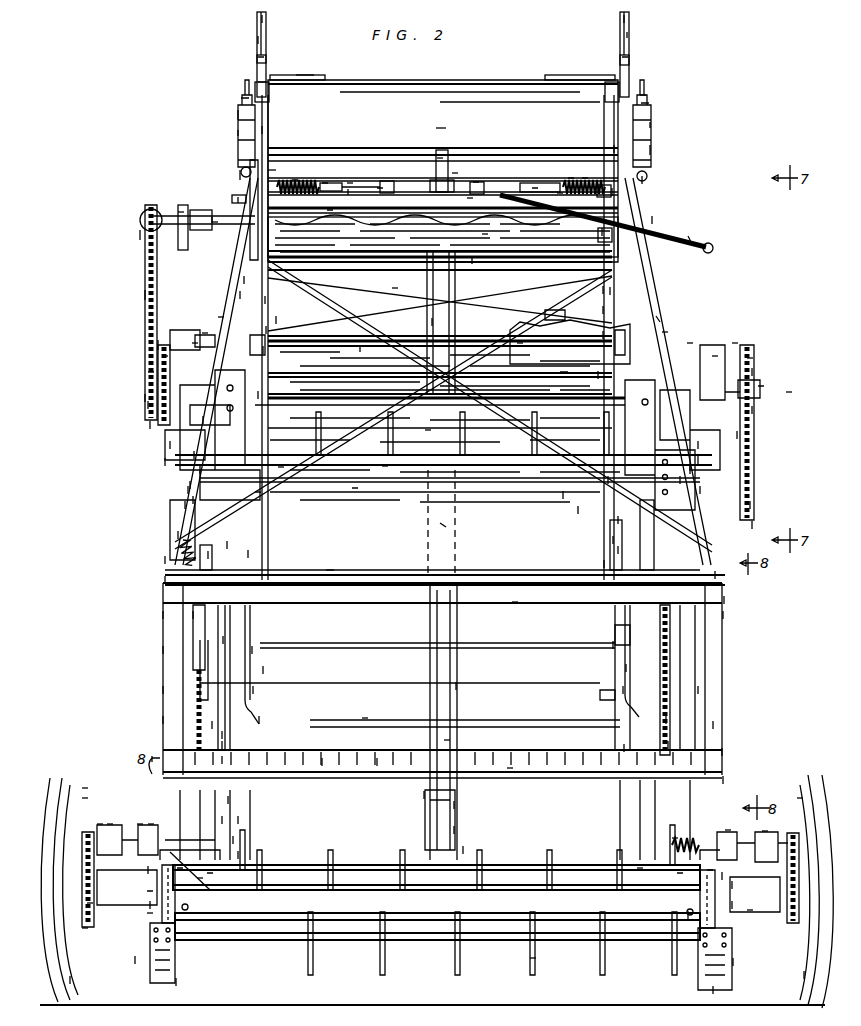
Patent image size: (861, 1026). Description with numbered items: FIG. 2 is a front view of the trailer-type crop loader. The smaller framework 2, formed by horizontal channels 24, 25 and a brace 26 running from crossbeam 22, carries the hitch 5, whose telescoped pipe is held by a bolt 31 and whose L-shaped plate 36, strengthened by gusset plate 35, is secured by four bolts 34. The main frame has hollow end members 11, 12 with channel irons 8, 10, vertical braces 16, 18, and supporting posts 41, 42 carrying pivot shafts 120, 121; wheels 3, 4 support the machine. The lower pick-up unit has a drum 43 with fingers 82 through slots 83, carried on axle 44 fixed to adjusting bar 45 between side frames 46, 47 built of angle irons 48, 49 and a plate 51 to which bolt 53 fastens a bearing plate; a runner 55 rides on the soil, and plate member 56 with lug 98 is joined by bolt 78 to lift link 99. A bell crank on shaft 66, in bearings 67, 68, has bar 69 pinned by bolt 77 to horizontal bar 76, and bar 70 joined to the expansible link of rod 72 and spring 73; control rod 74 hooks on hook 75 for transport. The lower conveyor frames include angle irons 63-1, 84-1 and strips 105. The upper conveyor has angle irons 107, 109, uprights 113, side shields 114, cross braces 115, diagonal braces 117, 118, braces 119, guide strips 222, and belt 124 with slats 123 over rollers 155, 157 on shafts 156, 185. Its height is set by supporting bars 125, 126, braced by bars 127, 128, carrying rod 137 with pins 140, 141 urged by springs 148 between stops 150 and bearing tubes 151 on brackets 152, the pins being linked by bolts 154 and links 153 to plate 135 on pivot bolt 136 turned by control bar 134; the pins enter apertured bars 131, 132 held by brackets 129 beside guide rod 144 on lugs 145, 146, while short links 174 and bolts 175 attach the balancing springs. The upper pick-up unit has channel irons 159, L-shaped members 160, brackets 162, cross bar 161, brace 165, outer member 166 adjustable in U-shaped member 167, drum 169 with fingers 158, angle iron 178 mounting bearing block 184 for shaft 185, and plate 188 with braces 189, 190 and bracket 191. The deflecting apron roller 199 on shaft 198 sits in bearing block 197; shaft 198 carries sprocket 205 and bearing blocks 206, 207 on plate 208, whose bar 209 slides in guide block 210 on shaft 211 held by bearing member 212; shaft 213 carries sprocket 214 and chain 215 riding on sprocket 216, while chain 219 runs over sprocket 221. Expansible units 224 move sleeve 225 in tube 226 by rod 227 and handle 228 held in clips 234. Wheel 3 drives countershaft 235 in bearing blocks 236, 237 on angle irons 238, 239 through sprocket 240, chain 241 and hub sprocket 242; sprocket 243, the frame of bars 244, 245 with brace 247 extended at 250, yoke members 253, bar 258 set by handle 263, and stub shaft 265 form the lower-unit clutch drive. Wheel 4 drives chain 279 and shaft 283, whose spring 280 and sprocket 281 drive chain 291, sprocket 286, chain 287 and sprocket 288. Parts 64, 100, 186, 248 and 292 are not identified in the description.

The rigid smaller framework 2 is at (380, 762).
The wheel 3 is at (72, 980).
The wheel 4 is at (805, 975).
The hitch 5 is at (465, 850).
The channel iron 8 is at (152, 758).
The channel iron 10 is at (725, 780).
The end member 11 is at (85, 930).
The end member 12 is at (750, 912).
The vertical brace 16 is at (163, 720).
The vertical brace 18 is at (715, 725).
The crossbeam 22 is at (515, 605).
The horizontal channel 24 is at (325, 762).
The horizontal channel 25 is at (510, 770).
The brace 26 is at (458, 686).
The bolt 31 is at (447, 742).
The bolts 34 is at (456, 805).
The gusset plate 35 is at (455, 830).
The L-shaped plate 36 is at (425, 795).
The supporting post 41 is at (165, 560).
The supporting post 42 is at (725, 615).
The drum 43 is at (415, 942).
The axle 44 is at (150, 895).
The adjusting bar 45 is at (150, 905).
The crop pick up side frame 46 is at (129, 963).
The crop pick up side frame 47 is at (741, 965).
The angle iron 48 is at (180, 870).
The angle iron 49 is at (185, 935).
The plate 51 is at (725, 876).
The bolt 53 is at (150, 915).
The runner 55 is at (178, 982).
The plate member 56 is at (210, 875).
The angle iron 63-1 is at (265, 670).
The spring 64 is at (640, 870).
The shaft 66 is at (330, 574).
The bearing 67 is at (165, 580).
The bearing 68 is at (715, 575).
The bar 69 is at (210, 555).
The bar 70 is at (195, 615).
The rod 72 is at (190, 490).
The spring 73 is at (230, 545).
The control rod 74 is at (722, 752).
The hook 75 is at (725, 600).
The horizontal bar 76 is at (615, 540).
The bolt 77 is at (620, 520).
The bolt 78 is at (240, 855).
The pick-up fingers 82 is at (533, 960).
The slots 83 is at (533, 935).
The angle iron 84-1 is at (615, 645).
The lug 98 is at (235, 840).
The angle iron link 99 is at (225, 640).
The conveyor 100 is at (365, 720).
The thin metal strip 105 is at (445, 525).
The angle iron 107 is at (262, 130).
The angle iron 109 is at (618, 150).
The uprights 113 is at (257, 40).
The side shields 114 is at (266, 19).
The cross braces 115 is at (475, 262).
The diagonal brace 117 is at (278, 320).
The diagonal brace 118 is at (403, 280).
The braces 119 is at (257, 60).
The pivot shaft 120 is at (180, 535).
The pivot shaft 121 is at (752, 505).
The slats 123 is at (305, 76).
The upper conveyor belt 124 is at (440, 130).
The supporting bar 125 is at (195, 455).
The supporting bar 126 is at (660, 320).
The bar 127 is at (280, 470).
The bar 128 is at (610, 480).
The rear brackets 129 is at (265, 350).
The bar 131 is at (268, 330).
The bar 132 is at (605, 310).
The control bar 134 is at (692, 240).
The rectangular plate 135 is at (455, 175).
The pivot bolt 136 is at (440, 160).
The rod 137 is at (470, 200).
The spring pressed pin 140 is at (560, 195).
The spring pressed pin 141 is at (352, 192).
The guide rod 144 is at (605, 290).
The lug 145 is at (605, 335).
The lug 146 is at (605, 232).
The springs 148 is at (295, 183).
The stop 150 is at (272, 172).
The bearing tube 151 is at (325, 185).
The bracket 152 is at (535, 190).
The link 153 is at (380, 190).
The bolt 154 is at (350, 185).
The roller 155 is at (264, 85).
The shaft 156 is at (645, 97).
The roller 157 is at (520, 345).
The pick up fingers 158 is at (385, 470).
The channel irons 159 is at (258, 495).
The L-shaped member 160 is at (170, 445).
The cross bar 161 is at (428, 432).
The brackets 162 is at (355, 490).
The brace 165 is at (680, 480).
The outer frame member 166 is at (165, 462).
The U-shaped frame member 167 is at (190, 485).
The pick up drum 169 is at (205, 420).
The short links 174 is at (185, 505).
The bolts 175 is at (195, 500).
The angle iron 178 is at (740, 435).
The bearing block 184 is at (750, 360).
The shaft 185 is at (150, 375).
The sprocket 186 is at (790, 395).
The plate 188 is at (690, 345).
The angle iron brace 189 is at (735, 345).
The angle iron brace 190 is at (715, 358).
The bracket 191 is at (665, 335).
The bearing block 197 is at (655, 220).
The upper roller shaft 198 is at (215, 226).
The roller 199 is at (485, 236).
The sprocket 205 is at (140, 235).
The bearing block 206 is at (240, 200).
The bearing block 207 is at (180, 215).
The plate 208 is at (215, 220).
The bar 209 is at (240, 295).
The guide block 210 is at (220, 320).
The shaft 211 is at (205, 335).
The bearing member 212 is at (195, 345).
The shaft 213 is at (150, 405).
The sprocket 214 is at (145, 398).
The sprocket chain 215 is at (145, 295).
The sprocket 216 is at (165, 360).
The sprocket chain 219 is at (160, 345).
The sprocket 221 is at (150, 425).
The guide strip 222 is at (434, 322).
The expansible device 224 is at (229, 136).
The sleeve 225 is at (243, 100).
The tube 226 is at (240, 115).
The rod 227 is at (240, 175).
The handle 228 is at (262, 720).
The clips 234 is at (260, 395).
The countershaft 235 is at (100, 826).
The bearing block 236 is at (110, 826).
The bearing block 237 is at (146, 812).
The angle iron 238 is at (150, 828).
The angle iron 239 is at (150, 870).
The sprocket 240 is at (85, 800).
The roller chain 241 is at (90, 905).
The sprocket 242 is at (85, 790).
The sprocket 243 is at (200, 880).
The bar member 244 is at (225, 760).
The bar member 245 is at (225, 745).
The bracing member 247 is at (215, 725).
The bar 248 is at (225, 735).
The extension of brace 250 is at (230, 800).
The yoke members 253 is at (240, 820).
The bar 258 is at (163, 650).
The handle member 263 is at (163, 615).
The stub shaft 265 is at (163, 690).
The roller chain 279 is at (800, 800).
The spring 280 is at (728, 832).
The sprocket 281 is at (675, 840).
The shaft 283 is at (765, 832).
The sprocket 286 is at (755, 525).
The roller chain 287 is at (755, 410).
The sprocket 288 is at (755, 372).
The chain 291 is at (700, 690).
The bar 292 is at (670, 745).